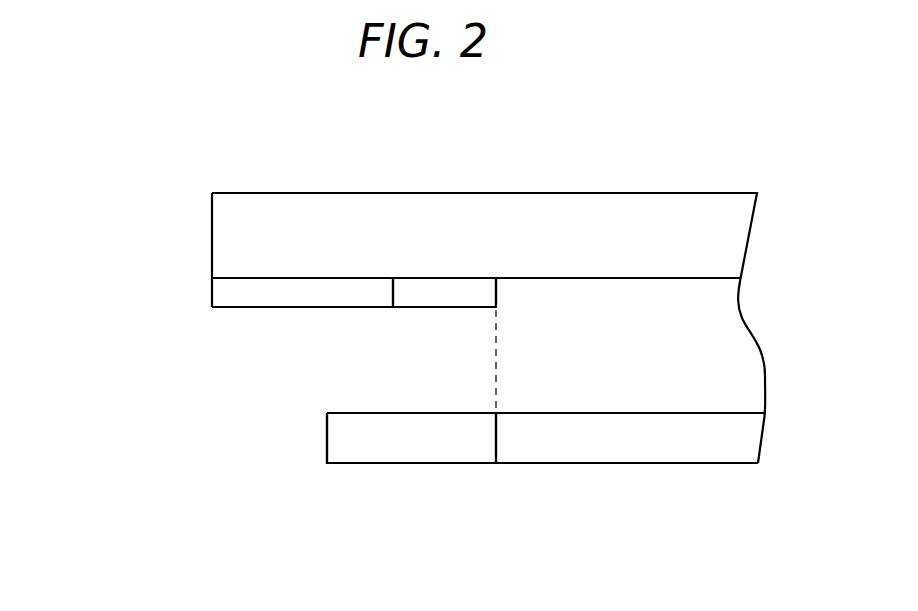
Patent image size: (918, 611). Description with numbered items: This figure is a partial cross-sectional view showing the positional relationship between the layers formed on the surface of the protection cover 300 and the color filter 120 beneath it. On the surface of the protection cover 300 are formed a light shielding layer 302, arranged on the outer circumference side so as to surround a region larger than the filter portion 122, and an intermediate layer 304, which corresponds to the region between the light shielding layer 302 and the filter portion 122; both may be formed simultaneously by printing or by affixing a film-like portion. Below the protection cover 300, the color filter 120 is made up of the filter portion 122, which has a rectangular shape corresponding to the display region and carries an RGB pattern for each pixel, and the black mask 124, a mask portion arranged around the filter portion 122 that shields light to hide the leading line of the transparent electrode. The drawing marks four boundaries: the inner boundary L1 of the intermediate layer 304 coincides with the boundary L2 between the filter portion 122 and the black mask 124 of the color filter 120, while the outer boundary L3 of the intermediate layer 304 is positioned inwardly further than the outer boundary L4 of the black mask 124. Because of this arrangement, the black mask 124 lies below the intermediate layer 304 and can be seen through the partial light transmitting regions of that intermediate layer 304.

The protection cover 300 is at (210, 229).
The light shielding layer 302 is at (233, 308).
The intermediate layer 304 is at (413, 308).
The color filter 120 is at (327, 445).
The filter portion 122 is at (667, 465).
The black mask 124 is at (405, 465).
The inner boundary of the intermediate layer L1 is at (496, 275).
The boundary between the filter portion and the black mask L2 is at (496, 465).
The outer boundary of the intermediate layer L3 is at (393, 275).
The outer boundary of the black mask L4 is at (325, 465).